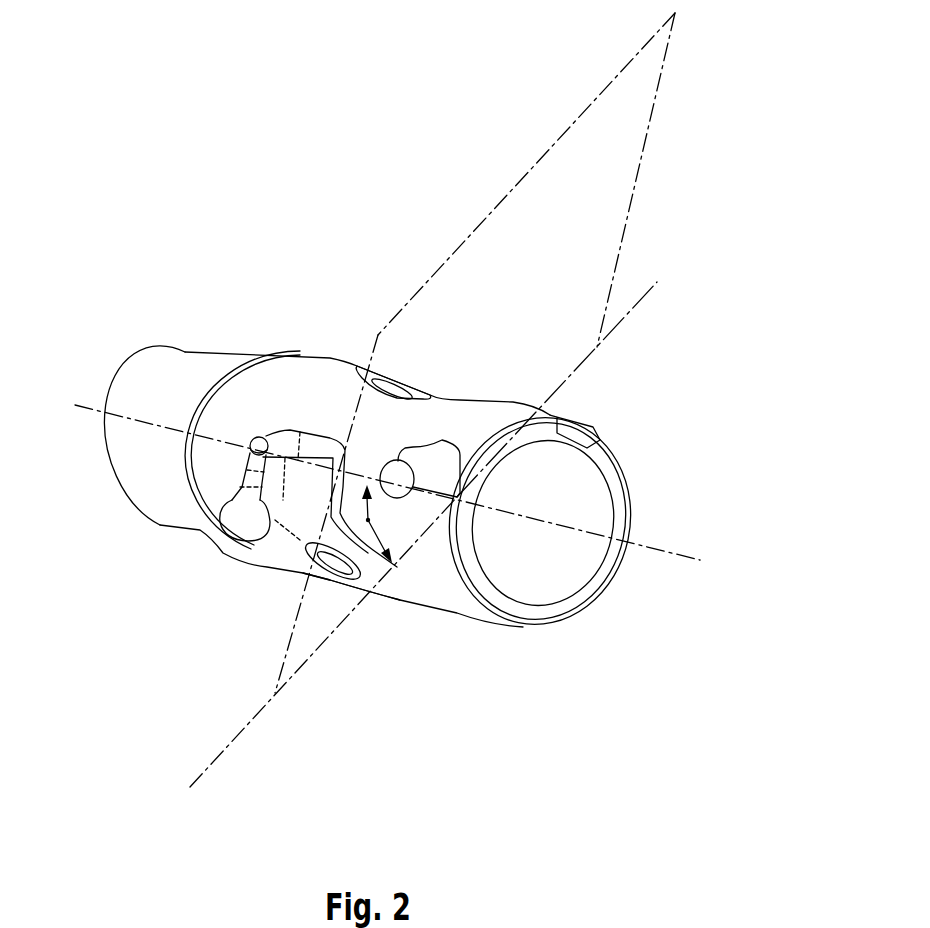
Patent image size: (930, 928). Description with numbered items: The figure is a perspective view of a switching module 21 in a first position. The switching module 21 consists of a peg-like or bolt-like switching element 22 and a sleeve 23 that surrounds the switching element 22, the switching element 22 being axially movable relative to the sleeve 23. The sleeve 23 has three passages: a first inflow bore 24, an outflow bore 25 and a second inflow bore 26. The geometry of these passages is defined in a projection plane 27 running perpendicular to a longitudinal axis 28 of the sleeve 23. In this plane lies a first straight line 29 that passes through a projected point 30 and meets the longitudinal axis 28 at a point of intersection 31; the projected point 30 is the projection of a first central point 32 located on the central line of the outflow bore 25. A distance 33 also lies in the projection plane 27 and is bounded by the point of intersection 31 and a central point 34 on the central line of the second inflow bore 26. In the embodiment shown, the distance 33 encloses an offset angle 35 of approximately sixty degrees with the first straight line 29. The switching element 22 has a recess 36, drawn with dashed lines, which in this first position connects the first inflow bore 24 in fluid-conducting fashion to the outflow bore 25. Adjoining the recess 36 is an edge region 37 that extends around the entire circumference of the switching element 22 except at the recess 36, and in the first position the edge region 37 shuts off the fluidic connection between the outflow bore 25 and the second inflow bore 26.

The switching module 21 is at (590, 189).
The switching element 22 is at (183, 373).
The sleeve 23 is at (430, 417).
The first inflow bore 24 is at (258, 445).
The outflow bore 25 is at (347, 572).
The second inflow bore 26 is at (404, 480).
The projection plane 27 is at (285, 650).
The longitudinal axis 28 is at (637, 545).
The first straight line 29 is at (238, 735).
The projected point 30 is at (387, 573).
The point of intersection 31 is at (457, 497).
The first central point 32 is at (333, 562).
The distance 33 is at (442, 440).
The central point 34 is at (397, 478).
The offset angle 35 is at (393, 565).
The recess 36 is at (257, 498).
The edge region 37 is at (276, 402).